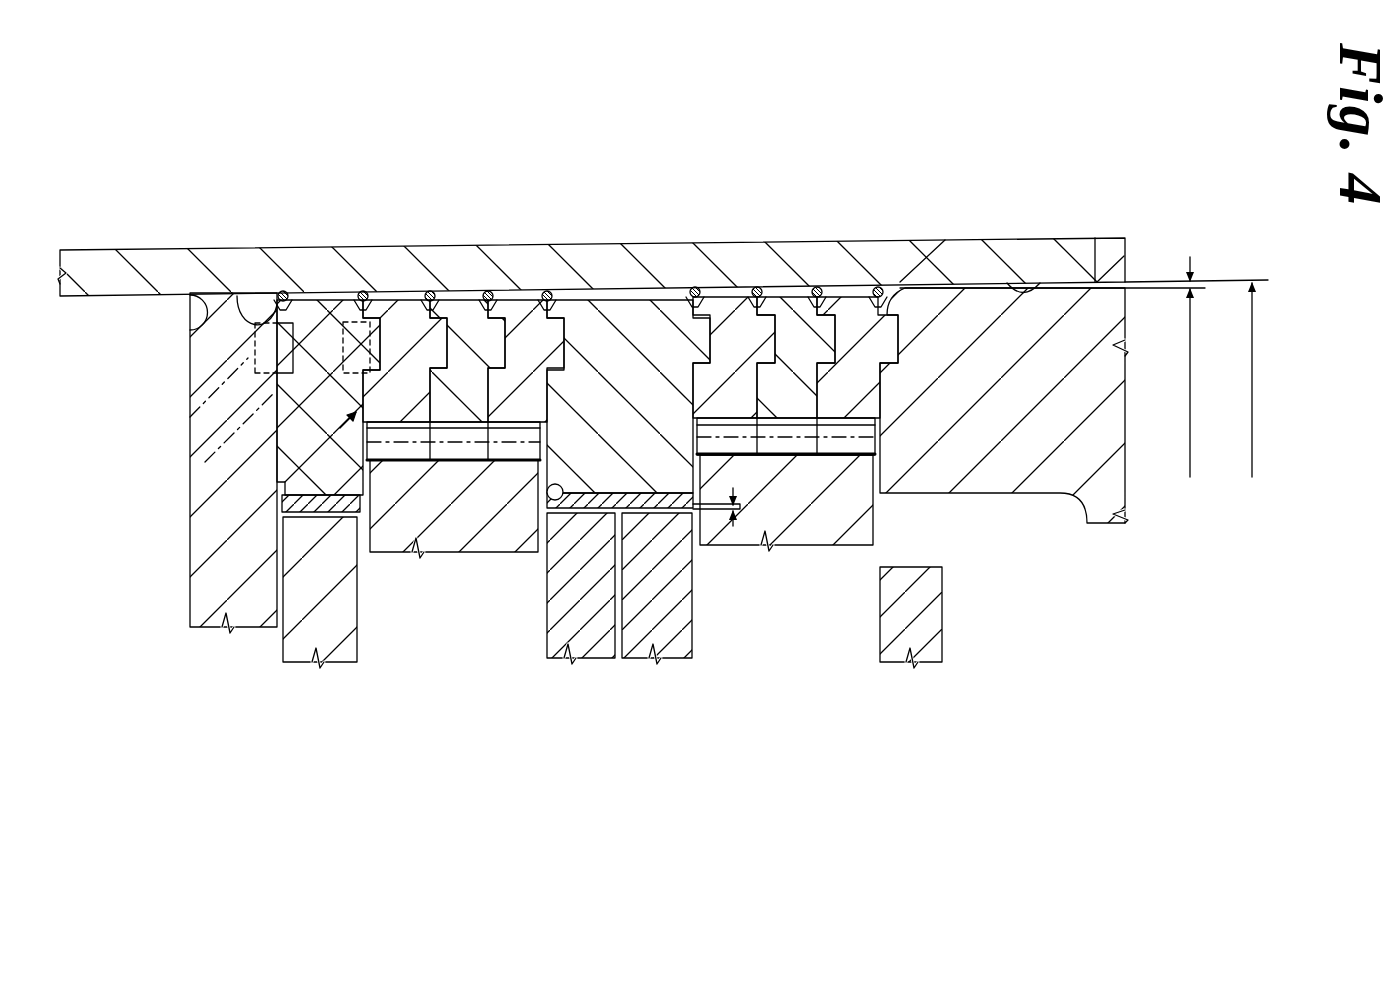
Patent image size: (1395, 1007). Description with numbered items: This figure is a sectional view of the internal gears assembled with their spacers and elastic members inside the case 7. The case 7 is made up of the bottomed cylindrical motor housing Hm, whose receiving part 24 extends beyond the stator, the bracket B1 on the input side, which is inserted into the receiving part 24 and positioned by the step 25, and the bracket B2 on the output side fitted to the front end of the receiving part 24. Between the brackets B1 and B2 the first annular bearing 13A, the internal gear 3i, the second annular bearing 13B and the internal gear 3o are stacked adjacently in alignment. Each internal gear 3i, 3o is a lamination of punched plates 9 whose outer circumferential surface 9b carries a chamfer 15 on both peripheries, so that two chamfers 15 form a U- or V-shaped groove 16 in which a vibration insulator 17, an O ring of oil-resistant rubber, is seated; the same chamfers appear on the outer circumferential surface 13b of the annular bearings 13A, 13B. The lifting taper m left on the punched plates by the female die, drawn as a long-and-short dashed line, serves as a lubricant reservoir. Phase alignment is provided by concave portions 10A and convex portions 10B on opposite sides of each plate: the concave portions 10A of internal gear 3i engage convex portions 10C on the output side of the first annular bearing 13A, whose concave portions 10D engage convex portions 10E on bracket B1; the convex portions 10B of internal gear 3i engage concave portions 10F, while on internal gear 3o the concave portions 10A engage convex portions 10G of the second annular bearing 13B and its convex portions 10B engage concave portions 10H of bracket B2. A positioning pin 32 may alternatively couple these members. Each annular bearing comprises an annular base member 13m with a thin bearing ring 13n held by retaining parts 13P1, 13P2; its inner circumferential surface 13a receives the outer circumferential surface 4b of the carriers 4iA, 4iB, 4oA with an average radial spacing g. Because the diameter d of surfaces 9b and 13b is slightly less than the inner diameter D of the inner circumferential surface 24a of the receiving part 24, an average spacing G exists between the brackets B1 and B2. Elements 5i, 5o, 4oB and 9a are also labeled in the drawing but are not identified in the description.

The case 7 is at (873, 225).
The motor housing Hm is at (92, 248).
The receiving part 24 is at (1090, 236).
The inner circumferential surface 24a is at (1053, 282).
The bracket in the output side B2 is at (1127, 259).
The bracket in the input side B1 is at (190, 545).
The step 25 is at (255, 325).
The positioning pin 32 is at (195, 425).
The internal gear 3i is at (278, 560).
The convex portions 10E is at (318, 298).
The concave portions 10D is at (233, 297).
The convex portions 10C is at (381, 298).
The outer circumferential surface 9b is at (390, 298).
The concave portions 10A is at (403, 297).
The convex portions 10B is at (457, 298).
The concave portions 10F is at (588, 292).
The convex portions 10G is at (703, 297).
The concave portions 10H is at (967, 292).
The second annular bearing 13B is at (556, 545).
The outer circumferential surface 13b is at (660, 295).
The punched plate 9 is at (397, 297).
The vibration insulator 17 is at (281, 293).
The groove 16 is at (827, 295).
The chamfer 15 is at (843, 295).
The internal gear 3o is at (887, 418).
The annular base member 13m is at (370, 465).
The lifting taper m is at (817, 458).
The first annular bearing 13A is at (441, 555).
The inner spacer 5i is at (437, 555).
The seal lip 9a is at (488, 552).
The outer circumferential surface 4b is at (520, 552).
The retaining part 13P1 is at (278, 505).
The carrier 4iA is at (357, 662).
The inner circumferential surface 13a is at (284, 600).
The thin bearing ring 13n is at (358, 600).
The carrier 4iB is at (550, 662).
The carrier 4oA is at (657, 662).
The retaining part 13P2 is at (647, 512).
The average spacing g is at (730, 527).
The outer spacer 5o is at (852, 547).
The outer blade B 4oB is at (943, 637).
The average spacing G is at (1190, 290).
The diameter d is at (1186, 383).
The inner diameter D is at (1252, 380).